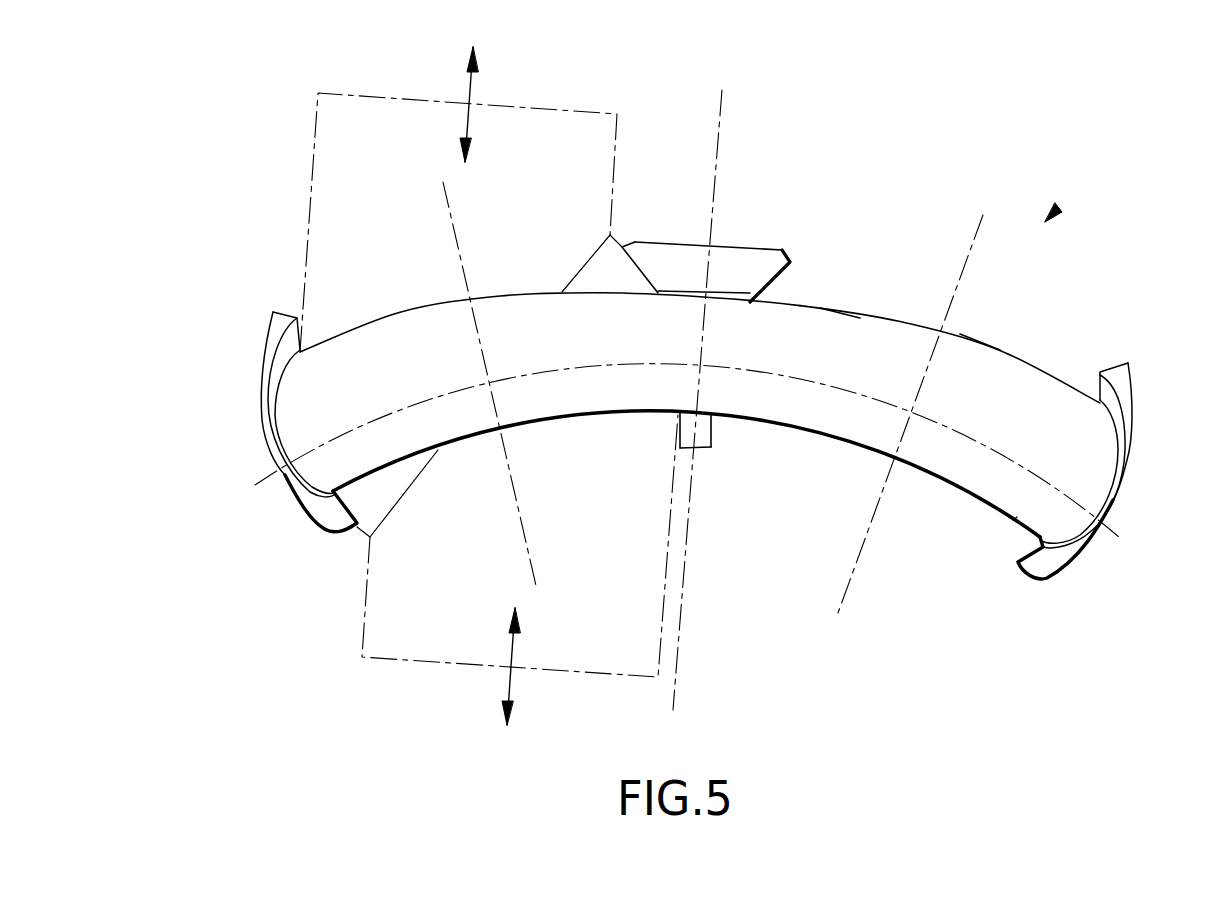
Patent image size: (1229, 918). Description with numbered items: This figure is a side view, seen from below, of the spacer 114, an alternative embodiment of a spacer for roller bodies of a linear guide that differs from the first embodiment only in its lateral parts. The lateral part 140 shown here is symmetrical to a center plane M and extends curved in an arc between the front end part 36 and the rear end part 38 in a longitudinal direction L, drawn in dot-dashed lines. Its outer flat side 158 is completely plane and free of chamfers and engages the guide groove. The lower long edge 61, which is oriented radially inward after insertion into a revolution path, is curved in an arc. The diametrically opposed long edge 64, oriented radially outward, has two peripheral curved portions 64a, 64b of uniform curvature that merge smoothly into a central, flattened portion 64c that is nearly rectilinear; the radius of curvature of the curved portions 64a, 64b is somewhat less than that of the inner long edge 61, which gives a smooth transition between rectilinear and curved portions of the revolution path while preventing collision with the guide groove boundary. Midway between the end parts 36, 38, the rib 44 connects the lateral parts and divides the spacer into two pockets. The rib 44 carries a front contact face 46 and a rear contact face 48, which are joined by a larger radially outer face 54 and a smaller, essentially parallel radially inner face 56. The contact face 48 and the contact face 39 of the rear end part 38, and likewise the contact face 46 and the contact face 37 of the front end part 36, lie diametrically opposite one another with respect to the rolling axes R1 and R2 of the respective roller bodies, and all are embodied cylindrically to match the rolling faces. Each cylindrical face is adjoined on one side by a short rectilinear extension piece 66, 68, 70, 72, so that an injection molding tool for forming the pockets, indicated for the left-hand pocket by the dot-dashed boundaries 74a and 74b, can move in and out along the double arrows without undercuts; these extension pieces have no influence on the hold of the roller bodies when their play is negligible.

The spacer 114 is at (1050, 218).
The long edge 64 is at (915, 320).
The curved portion 64a is at (373, 320).
The curved portion 64b is at (1020, 360).
The central flattened portion 64c is at (588, 292).
The outer flat side 158 is at (837, 337).
The lateral part 140 is at (982, 358).
The rib 44 is at (735, 215).
The radially outer face 54 is at (758, 247).
The front contact face 46 is at (777, 280).
The rear contact face 48 is at (640, 268).
The radially inner face 56 is at (692, 484).
The rectilinear extension piece 66 is at (677, 433).
The rectilinear extension piece 68 is at (713, 433).
The front end part 36 is at (1118, 420).
The contact face 37 is at (1102, 377).
The rectilinear extension piece 70 is at (1100, 367).
The rear end part 38 is at (263, 409).
The contact face 39 is at (312, 328).
The rectilinear extension piece 72 is at (297, 317).
The lower long edge 61 is at (355, 523).
The pocket boundary 74a is at (377, 635).
The pocket boundary 74b is at (332, 117).
The rolling axis R1 is at (912, 412).
The rolling axis R2 is at (490, 385).
The longitudinal direction L is at (1040, 480).
The center plane M is at (680, 677).